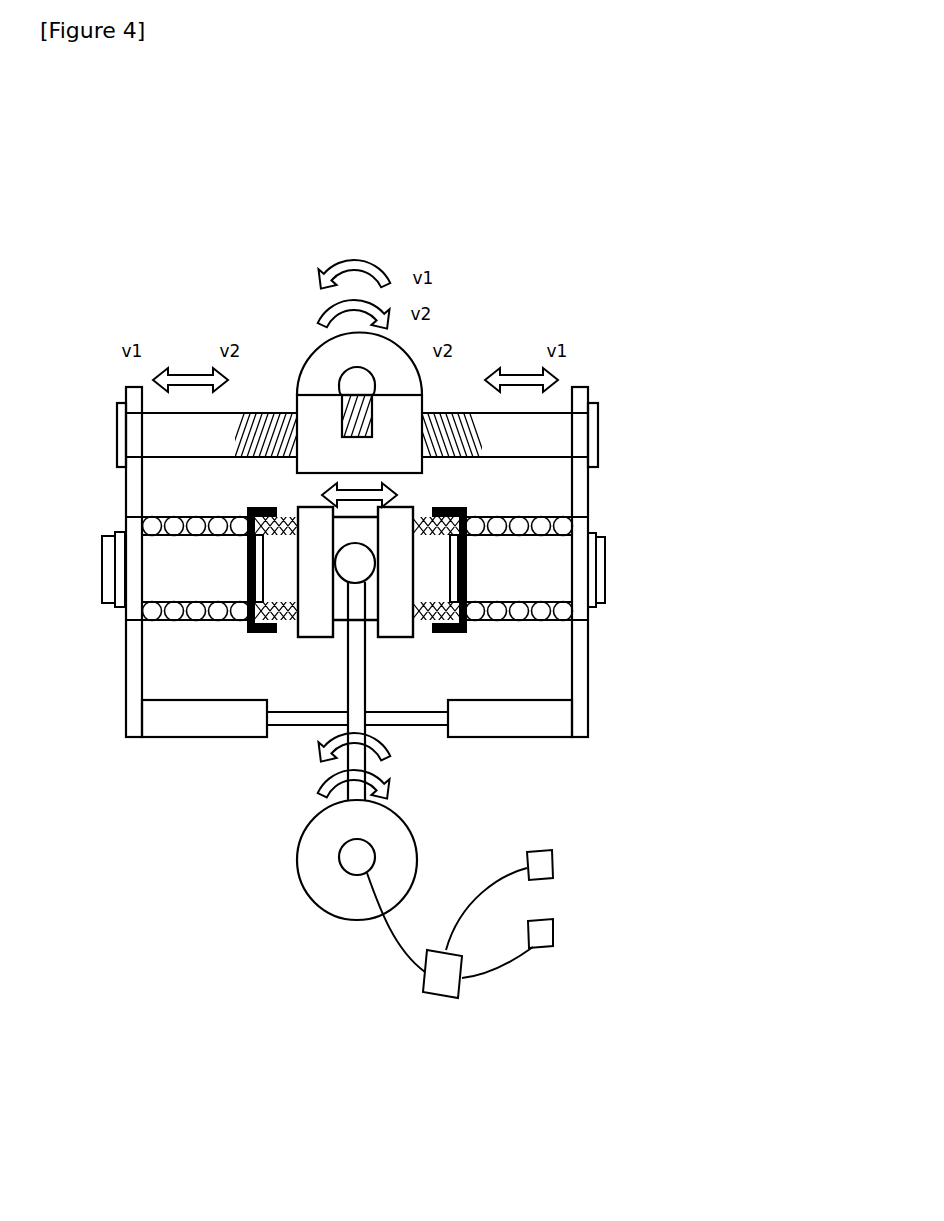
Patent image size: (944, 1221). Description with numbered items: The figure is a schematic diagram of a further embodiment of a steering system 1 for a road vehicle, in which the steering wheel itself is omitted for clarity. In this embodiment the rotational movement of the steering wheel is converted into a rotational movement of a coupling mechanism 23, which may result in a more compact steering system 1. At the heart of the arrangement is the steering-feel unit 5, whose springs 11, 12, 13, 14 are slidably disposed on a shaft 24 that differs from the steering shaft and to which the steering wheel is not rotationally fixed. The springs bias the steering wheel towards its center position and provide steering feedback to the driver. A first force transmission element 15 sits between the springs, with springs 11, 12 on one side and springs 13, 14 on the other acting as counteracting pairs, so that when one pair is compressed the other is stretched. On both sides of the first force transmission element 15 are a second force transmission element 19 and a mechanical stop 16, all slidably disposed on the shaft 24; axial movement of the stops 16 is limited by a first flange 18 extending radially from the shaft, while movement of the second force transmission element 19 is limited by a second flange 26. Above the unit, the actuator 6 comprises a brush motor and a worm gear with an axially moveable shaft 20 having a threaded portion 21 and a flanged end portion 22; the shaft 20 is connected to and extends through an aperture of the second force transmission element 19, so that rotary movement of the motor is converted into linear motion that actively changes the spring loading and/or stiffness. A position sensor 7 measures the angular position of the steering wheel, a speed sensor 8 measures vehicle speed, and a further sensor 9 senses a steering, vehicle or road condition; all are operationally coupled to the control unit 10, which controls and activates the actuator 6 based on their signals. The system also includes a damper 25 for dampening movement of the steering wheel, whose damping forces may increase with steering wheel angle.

The steering system 1 is at (150, 220).
The steering-feel unit 5 is at (504, 262).
The actuator 6 is at (315, 347).
The position sensor 7 is at (343, 870).
The speed sensor 8 is at (553, 935).
The further sensor 9 is at (538, 850).
The control unit 10 is at (443, 997).
The spring 11 is at (425, 622).
The spring 12 is at (520, 621).
The spring 13 is at (277, 634).
The spring 14 is at (173, 621).
The first force transmission element 15 is at (318, 638).
The mechanical stop 16 is at (453, 512).
The first flange 18 is at (255, 570).
The second force transmission element 19 is at (125, 505).
The axially moveable shaft 20 is at (179, 457).
The threaded portion 21 is at (278, 412).
The flanged end portion 22 is at (598, 437).
The coupling mechanism 23 is at (290, 806).
The shaft 24 is at (606, 568).
The damper 25 is at (172, 738).
The second flange 26 is at (122, 608).